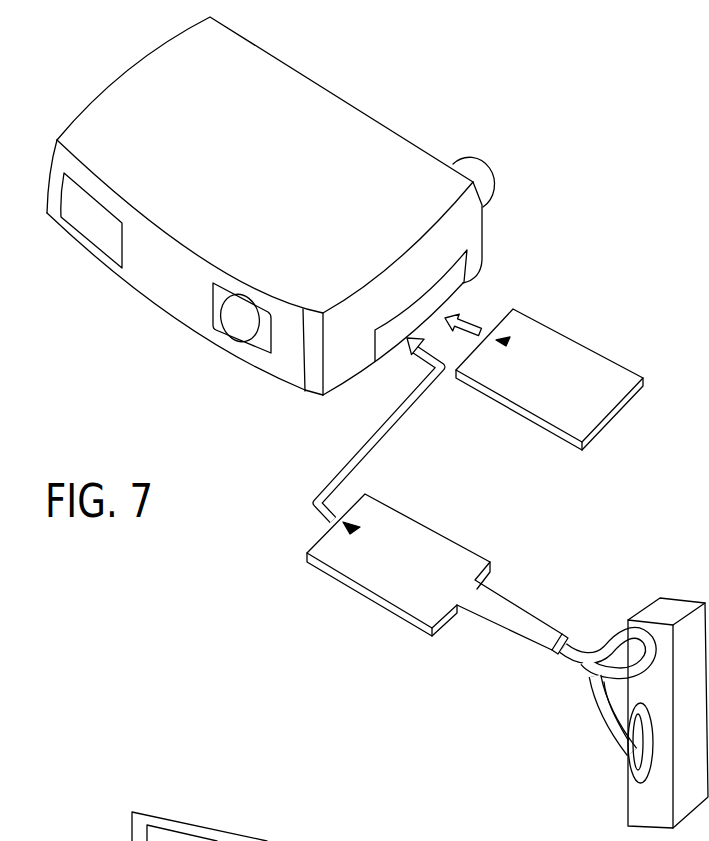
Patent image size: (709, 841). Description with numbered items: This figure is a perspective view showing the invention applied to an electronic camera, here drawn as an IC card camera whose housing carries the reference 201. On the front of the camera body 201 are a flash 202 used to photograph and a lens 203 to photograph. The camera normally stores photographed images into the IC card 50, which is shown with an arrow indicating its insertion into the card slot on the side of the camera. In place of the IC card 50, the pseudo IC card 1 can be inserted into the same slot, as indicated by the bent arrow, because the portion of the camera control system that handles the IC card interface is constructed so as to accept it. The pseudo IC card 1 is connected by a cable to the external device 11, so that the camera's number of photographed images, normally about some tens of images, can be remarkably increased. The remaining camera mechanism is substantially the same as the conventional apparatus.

The camera body 201 is at (318, 82).
The flash 202 is at (100, 235).
The lens 203 is at (238, 328).
The IC card 50 is at (603, 353).
The pseudo IC card 1 is at (390, 612).
The external device 11 is at (627, 797).